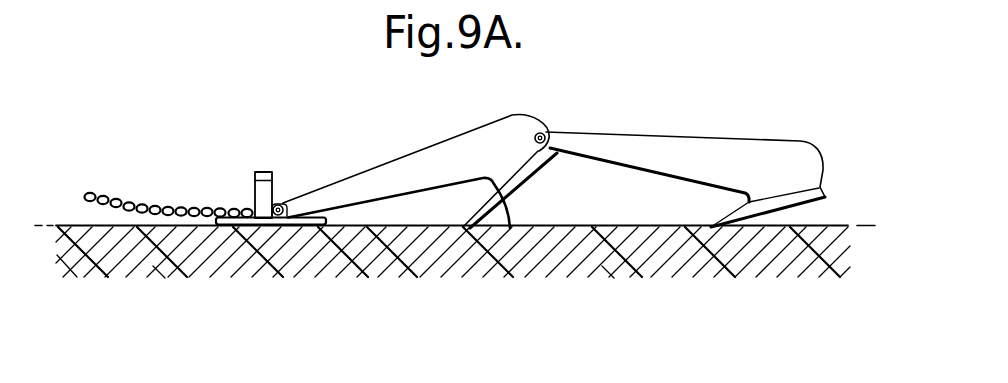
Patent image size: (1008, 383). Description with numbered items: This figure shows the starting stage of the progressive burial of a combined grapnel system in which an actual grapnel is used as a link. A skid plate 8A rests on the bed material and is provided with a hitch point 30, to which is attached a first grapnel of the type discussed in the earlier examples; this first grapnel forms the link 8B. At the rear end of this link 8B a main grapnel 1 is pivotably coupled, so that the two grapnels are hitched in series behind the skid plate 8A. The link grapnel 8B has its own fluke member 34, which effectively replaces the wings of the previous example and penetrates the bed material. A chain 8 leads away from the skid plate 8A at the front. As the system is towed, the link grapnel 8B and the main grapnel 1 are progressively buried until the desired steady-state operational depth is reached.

The main grapnel 1 is at (735, 137).
The chain 8 is at (171, 205).
The skid plate 8A is at (247, 228).
The link grapnel 8B is at (443, 153).
The hitch point 30 is at (281, 206).
The fluke member 34 is at (510, 228).